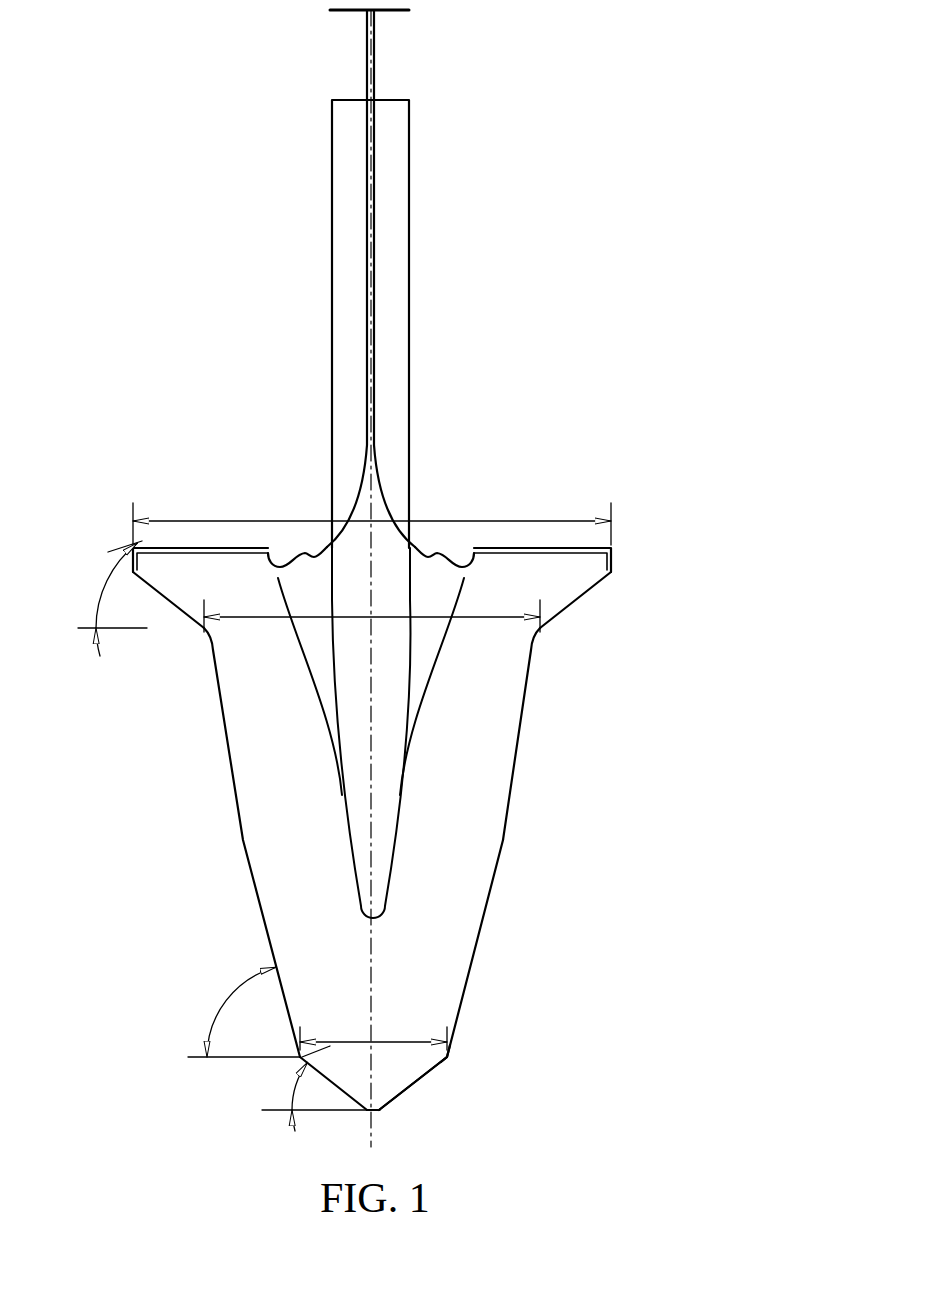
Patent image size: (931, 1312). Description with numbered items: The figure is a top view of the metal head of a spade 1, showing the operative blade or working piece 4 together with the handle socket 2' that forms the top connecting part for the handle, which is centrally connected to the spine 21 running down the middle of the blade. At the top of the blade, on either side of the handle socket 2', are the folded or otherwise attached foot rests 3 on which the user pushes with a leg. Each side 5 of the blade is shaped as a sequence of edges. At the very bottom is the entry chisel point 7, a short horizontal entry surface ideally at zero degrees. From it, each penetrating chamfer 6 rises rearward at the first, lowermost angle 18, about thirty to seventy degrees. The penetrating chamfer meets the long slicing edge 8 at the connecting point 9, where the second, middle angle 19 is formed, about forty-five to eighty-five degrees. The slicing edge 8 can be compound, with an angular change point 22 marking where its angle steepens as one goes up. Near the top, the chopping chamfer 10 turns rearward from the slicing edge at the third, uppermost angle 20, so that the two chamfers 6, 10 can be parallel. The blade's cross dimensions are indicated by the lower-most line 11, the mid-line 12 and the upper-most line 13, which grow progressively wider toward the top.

The spade 1 is at (275, 272).
The handle socket 2' is at (409, 324).
The foot rests 3 is at (241, 551).
The working piece (blade) 4 is at (178, 770).
The either side 5 is at (530, 906).
The penetrating chamfer 6 is at (436, 1068).
The entry chisel point 7 is at (381, 1110).
The slicing edge 8 is at (516, 768).
The connecting point 9 is at (448, 1058).
The chopping chamfer 10 is at (577, 600).
The lower-most line 11 is at (428, 1042).
The mid-line 12 is at (476, 619).
The upper-most line 13 is at (540, 521).
The first, lowermost angle 18 is at (298, 1075).
The second, middle angle 19 is at (262, 970).
The third, uppermost angle 20 is at (112, 570).
The spine 21 is at (348, 818).
The angular change point 22 is at (506, 840).